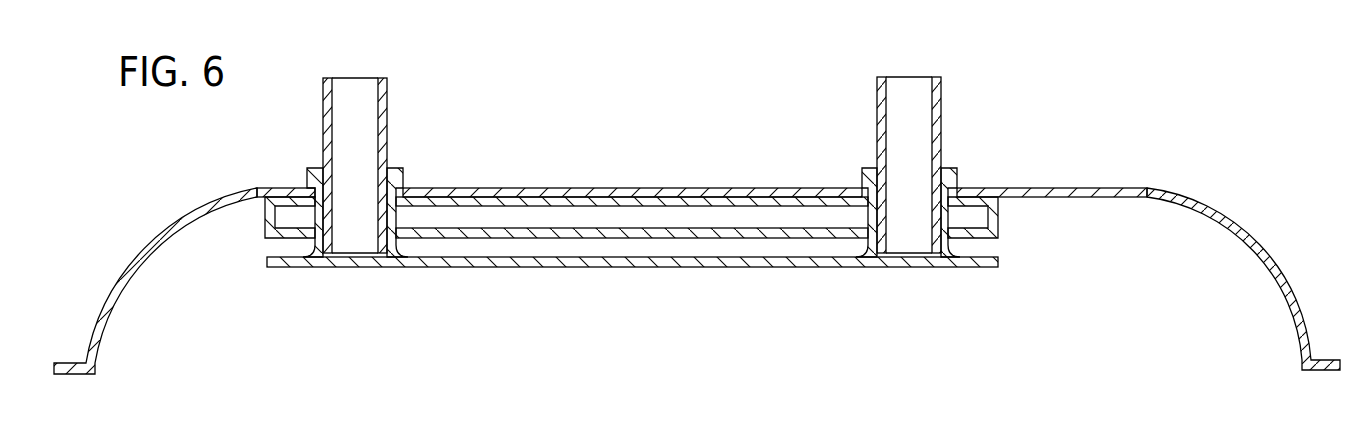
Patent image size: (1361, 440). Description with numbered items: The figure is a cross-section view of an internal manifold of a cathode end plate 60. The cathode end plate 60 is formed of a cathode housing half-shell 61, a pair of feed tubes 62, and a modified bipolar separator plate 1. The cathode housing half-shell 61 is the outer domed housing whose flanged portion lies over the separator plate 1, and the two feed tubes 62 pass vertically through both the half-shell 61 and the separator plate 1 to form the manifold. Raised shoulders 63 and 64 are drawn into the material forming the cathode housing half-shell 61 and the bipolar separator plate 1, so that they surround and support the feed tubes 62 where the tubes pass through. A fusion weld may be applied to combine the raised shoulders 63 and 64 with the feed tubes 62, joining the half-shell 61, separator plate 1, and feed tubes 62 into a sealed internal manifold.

The bipolar separator plate 1 is at (817, 267).
The cathode end plate 60 is at (1167, 90).
The cathode housing half-shell 61 is at (1222, 215).
The feed tubes 62 is at (387, 80).
The raised shoulder 63 is at (388, 167).
The raised shoulder 64 is at (405, 172).